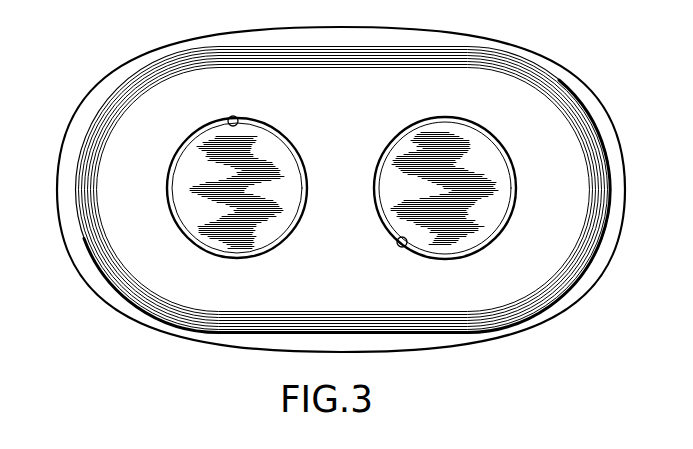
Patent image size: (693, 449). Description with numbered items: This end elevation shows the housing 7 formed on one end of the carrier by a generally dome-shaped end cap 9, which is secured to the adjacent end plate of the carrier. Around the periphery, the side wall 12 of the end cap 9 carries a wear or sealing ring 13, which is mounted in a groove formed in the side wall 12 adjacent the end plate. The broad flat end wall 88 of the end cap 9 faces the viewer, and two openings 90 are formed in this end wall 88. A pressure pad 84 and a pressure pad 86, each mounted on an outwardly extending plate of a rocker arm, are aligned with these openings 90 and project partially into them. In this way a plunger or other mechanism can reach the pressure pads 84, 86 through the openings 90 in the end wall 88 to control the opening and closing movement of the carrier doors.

The housing 7 is at (560, 101).
The end cap 9 is at (185, 288).
The side wall 12 is at (104, 117).
The wear or sealing ring 13 is at (126, 71).
The pressure pad 84 is at (262, 147).
The pressure pad 86 is at (473, 152).
The end wall 88 is at (493, 83).
The opening 90 is at (238, 120).